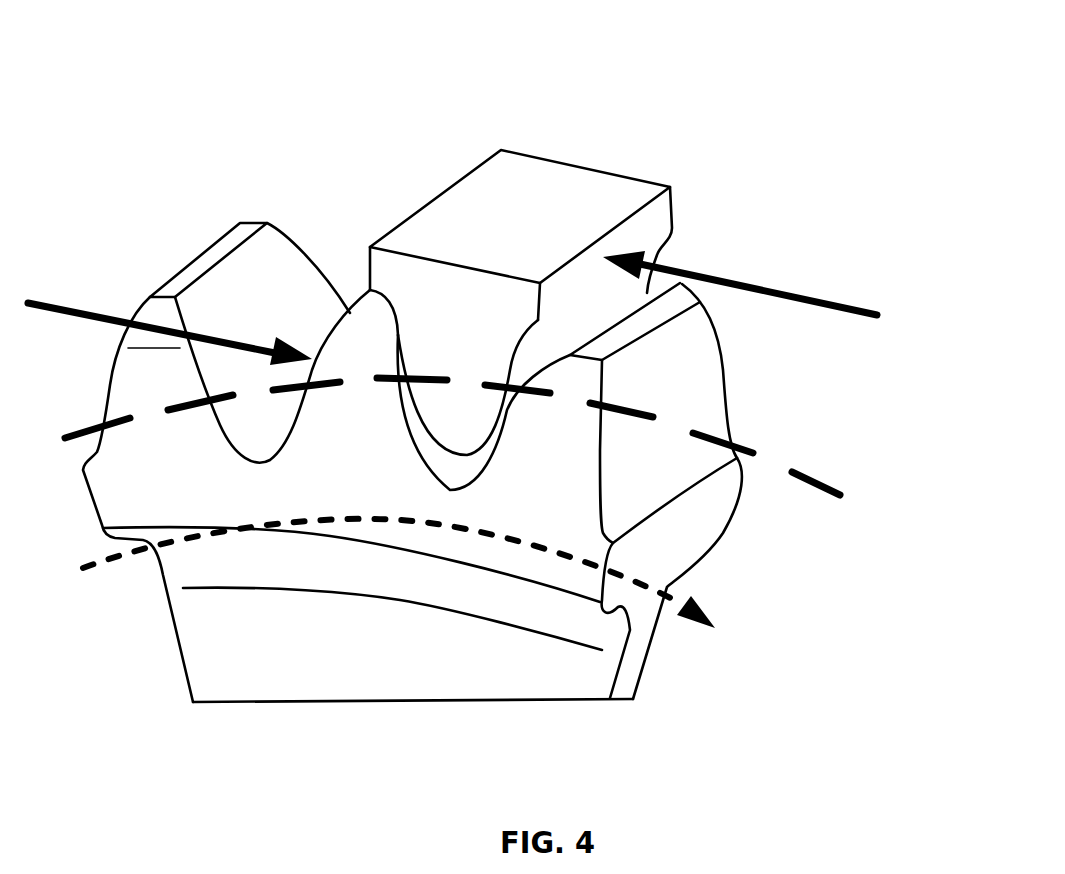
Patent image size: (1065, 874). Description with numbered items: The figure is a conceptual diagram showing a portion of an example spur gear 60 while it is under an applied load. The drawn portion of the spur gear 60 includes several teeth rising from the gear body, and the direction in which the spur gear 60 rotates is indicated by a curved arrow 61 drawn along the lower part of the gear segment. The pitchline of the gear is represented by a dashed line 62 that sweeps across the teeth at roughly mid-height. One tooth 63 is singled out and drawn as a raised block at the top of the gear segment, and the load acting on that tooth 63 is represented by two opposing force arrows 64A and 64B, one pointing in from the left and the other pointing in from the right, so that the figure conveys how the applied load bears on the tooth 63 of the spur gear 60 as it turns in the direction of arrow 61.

The spur gear 60 is at (188, 90).
The arrow indicating direction of rotation 61 is at (228, 538).
The pitchline 62 is at (753, 450).
The tooth 63 is at (368, 317).
The force arrow 64A is at (228, 353).
The force arrow 64B is at (787, 290).